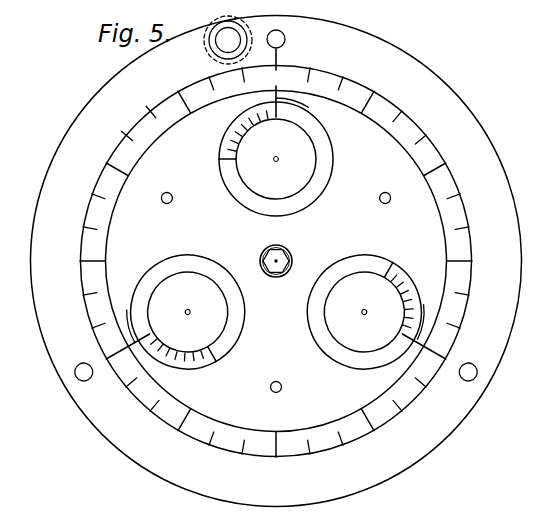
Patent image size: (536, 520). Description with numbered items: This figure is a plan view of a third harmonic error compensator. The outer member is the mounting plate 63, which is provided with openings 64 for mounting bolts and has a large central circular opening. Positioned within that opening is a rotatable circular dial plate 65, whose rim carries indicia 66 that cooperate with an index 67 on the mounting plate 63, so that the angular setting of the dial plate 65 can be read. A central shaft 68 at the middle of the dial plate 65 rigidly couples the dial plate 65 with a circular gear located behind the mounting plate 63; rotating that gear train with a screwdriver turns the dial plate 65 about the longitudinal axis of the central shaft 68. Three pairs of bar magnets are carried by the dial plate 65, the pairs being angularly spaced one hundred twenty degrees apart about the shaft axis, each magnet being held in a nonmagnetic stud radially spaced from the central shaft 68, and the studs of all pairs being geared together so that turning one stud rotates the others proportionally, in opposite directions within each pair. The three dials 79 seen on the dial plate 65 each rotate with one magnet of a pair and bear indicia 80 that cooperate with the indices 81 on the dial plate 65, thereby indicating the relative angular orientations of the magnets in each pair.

The mounting plate 63 is at (387, 43).
The openings 64 is at (285, 41).
The dial plate 65 is at (377, 124).
The indicia 66 is at (129, 136).
The index 67 is at (278, 61).
The central shaft 68 is at (288, 250).
The dials 79 is at (322, 173).
The indicia 80 is at (238, 127).
The indices 81 is at (308, 107).